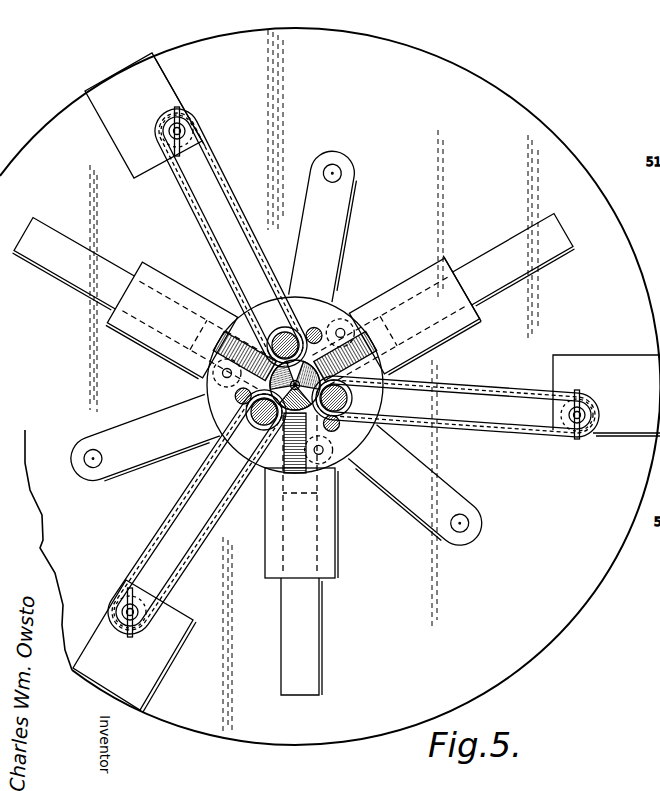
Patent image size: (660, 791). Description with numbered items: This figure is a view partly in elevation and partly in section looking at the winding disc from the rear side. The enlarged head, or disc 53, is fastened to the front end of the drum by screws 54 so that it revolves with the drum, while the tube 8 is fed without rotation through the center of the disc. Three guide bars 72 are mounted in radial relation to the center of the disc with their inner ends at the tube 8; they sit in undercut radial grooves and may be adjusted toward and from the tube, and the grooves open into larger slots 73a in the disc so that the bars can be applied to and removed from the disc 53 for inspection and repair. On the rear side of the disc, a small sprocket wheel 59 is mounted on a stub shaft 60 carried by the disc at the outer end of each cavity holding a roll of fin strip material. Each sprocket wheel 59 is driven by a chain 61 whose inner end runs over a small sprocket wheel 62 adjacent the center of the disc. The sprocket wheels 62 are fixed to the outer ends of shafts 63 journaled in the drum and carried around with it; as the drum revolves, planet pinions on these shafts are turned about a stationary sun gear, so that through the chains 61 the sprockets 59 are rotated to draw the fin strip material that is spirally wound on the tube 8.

The enlarged head 53 is at (557, 618).
The larger slots 73a is at (294, 446).
The guide bar 72 is at (289, 390).
The tube 8 is at (295, 380).
The screws 54 is at (318, 329).
The chains 61 is at (203, 233).
The small sprocket wheels 62 is at (279, 330).
The shafts 63 is at (250, 413).
The small sprocket wheel 59 is at (198, 150).
The stub shaft 60 is at (193, 125).